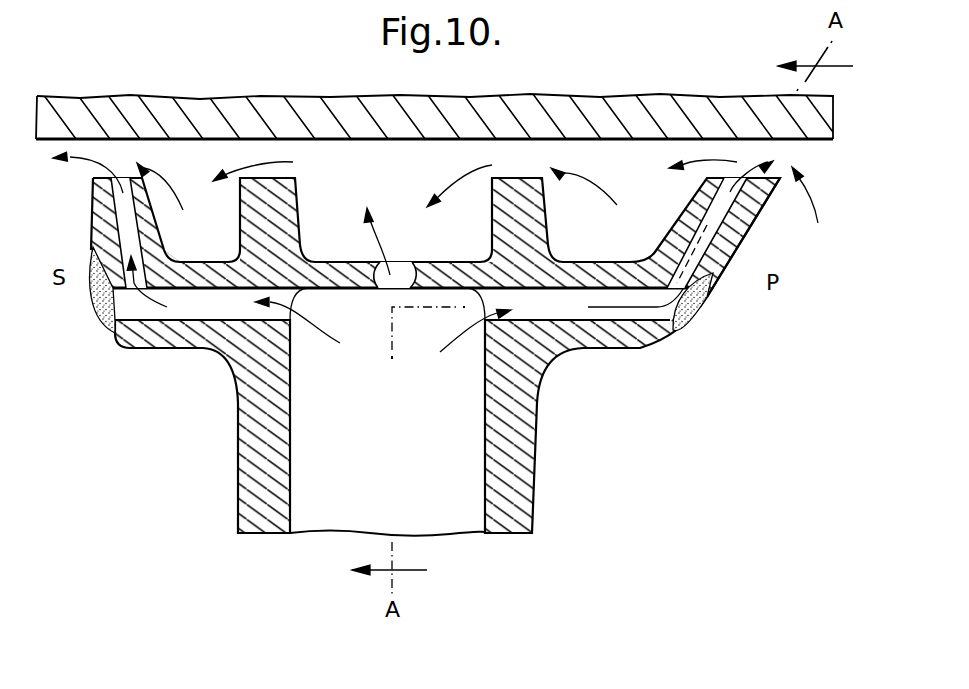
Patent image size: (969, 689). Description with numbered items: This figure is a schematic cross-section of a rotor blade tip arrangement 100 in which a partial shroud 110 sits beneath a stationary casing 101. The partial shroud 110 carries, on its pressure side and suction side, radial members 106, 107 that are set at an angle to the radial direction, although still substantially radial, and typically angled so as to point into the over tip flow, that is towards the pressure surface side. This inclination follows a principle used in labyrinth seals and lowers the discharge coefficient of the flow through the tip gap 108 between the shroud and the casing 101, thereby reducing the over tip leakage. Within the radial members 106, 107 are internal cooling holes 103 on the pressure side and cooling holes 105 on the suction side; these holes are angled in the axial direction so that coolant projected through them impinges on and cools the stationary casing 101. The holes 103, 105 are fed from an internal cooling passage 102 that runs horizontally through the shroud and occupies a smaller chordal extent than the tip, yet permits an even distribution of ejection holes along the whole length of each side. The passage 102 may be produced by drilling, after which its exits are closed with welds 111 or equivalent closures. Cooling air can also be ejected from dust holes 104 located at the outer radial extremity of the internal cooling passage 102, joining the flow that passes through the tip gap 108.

The rotor blade tip arrangement 100 is at (568, 462).
The stationary casing 101 is at (657, 103).
The internal cooling passage 102 is at (188, 310).
The cooling hole 103 is at (713, 223).
The dust hole 104 is at (385, 291).
The cooling hole 105 is at (127, 248).
The radial member 106 is at (730, 263).
The radial member 107 is at (103, 213).
The tip gap 108 is at (795, 158).
The partial shroud 110 is at (600, 288).
The weld 111 is at (97, 322).